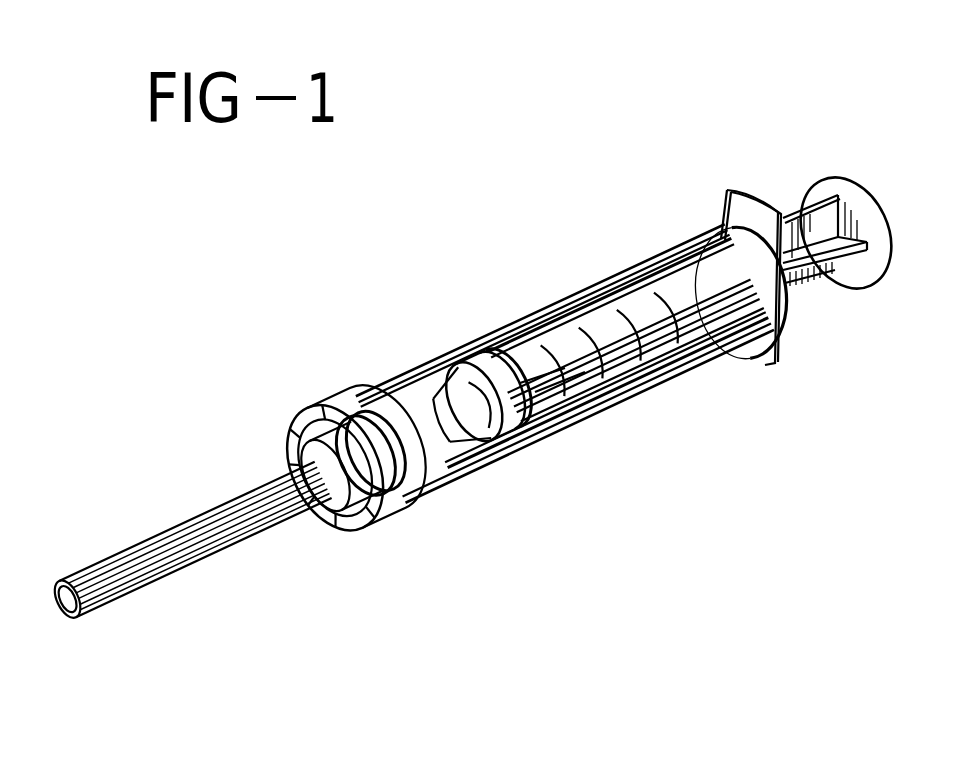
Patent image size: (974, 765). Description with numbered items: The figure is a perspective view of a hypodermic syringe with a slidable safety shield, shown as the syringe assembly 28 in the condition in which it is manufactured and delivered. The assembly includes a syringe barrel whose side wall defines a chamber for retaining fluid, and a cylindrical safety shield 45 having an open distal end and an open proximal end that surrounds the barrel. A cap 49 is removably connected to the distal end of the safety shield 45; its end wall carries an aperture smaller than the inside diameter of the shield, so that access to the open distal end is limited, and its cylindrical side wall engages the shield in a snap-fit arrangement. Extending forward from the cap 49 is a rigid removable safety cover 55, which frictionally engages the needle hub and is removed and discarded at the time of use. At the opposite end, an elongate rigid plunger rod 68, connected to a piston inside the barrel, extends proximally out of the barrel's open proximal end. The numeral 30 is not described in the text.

The syringe assembly 28 is at (476, 238).
The syringe barrel 30 is at (480, 457).
The safety shield 45 is at (630, 388).
The cap 49 is at (323, 410).
The safety cover 55 is at (180, 523).
The plunger rod 68 is at (807, 283).